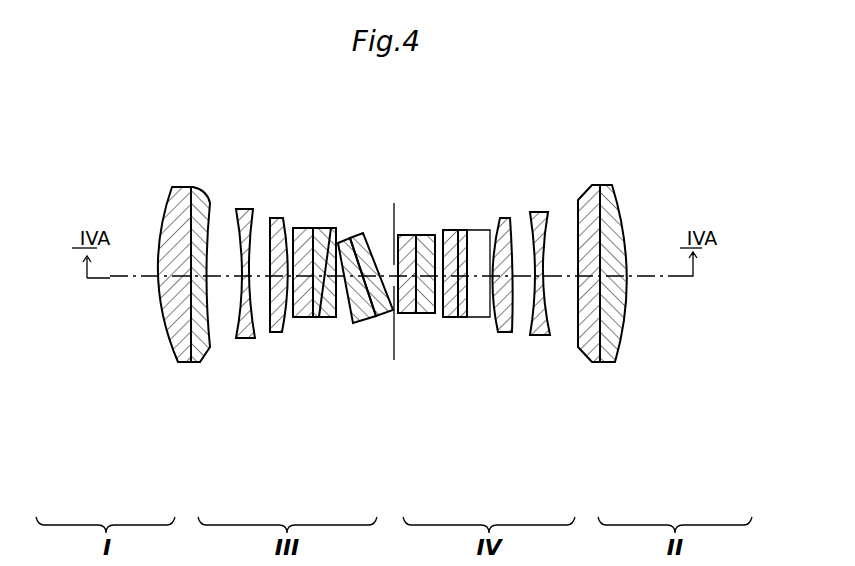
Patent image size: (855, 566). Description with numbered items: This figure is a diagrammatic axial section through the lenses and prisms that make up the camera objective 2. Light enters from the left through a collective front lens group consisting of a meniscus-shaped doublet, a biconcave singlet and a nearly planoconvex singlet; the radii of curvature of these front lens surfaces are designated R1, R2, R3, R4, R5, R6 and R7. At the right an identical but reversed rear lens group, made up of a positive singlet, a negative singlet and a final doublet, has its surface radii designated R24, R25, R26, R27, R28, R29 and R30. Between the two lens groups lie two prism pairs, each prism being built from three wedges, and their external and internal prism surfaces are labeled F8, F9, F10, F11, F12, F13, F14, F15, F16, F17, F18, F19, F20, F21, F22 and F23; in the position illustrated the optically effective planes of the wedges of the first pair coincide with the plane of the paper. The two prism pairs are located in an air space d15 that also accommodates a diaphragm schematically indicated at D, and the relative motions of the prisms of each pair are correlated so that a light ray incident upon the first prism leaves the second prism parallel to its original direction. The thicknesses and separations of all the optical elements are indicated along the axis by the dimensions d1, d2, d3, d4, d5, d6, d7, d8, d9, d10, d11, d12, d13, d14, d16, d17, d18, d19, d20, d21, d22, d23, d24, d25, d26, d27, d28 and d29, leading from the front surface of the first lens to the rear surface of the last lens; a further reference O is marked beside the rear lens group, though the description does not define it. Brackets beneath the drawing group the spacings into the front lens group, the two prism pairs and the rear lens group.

The objective 2 is at (133, 318).
The diaphragm D is at (394, 360).
The image plane reference O is at (628, 278).
The radius of curvature R1 is at (158, 262).
The radius of curvature R2 is at (191, 266).
The radius of curvature R3 is at (207, 260).
The radius of curvature R4 is at (240, 266).
The radius of curvature R5 is at (250, 258).
The radius of curvature R6 is at (270, 250).
The radius of curvature R7 is at (287, 255).
The prism surface F8 is at (293, 268).
The prism surface F9 is at (313, 262).
The prism surface F10 is at (335, 262).
The prism surface F11 is at (339, 258).
The prism surface F12 is at (355, 262).
The prism surface F13 is at (372, 262).
The prism surface F14 is at (398, 265).
The prism surface F15 is at (416, 265).
The prism surface F16 is at (434, 265).
The prism surface F17 is at (443, 262).
The prism surface F18 is at (458, 262).
The prism surface F19 is at (488, 262).
The prism surface F20 is at (493, 262).
The prism surface F21 is at (512, 262).
The prism surface F22 is at (534, 262).
The prism surface F23 is at (543, 262).
The radius of curvature R24 is at (578, 258).
The radius of curvature R25 is at (600, 258).
The radius of curvature R26 is at (618, 202).
The radius of curvature R27 is at (621, 217).
The radius of curvature R28 is at (623, 230).
The radius of curvature R29 is at (625, 243).
The radius of curvature R30 is at (627, 255).
The thickness or separation d1 is at (177, 362).
The thickness or separation d2 is at (200, 362).
The thickness or separation d3 is at (223, 276).
The thickness or separation d4 is at (247, 338).
The thickness or separation d5 is at (263, 276).
The thickness or separation d6 is at (278, 332).
The thickness or separation d7 is at (290, 276).
The thickness or separation d8 is at (303, 317).
The thickness or separation d9 is at (313, 317).
The thickness or separation d10 is at (323, 317).
The thickness or separation d11 is at (338, 276).
The thickness or separation d12 is at (352, 323).
The thickness or separation d13 is at (366, 319).
The thickness or separation d14 is at (378, 315).
The air space d15 is at (392, 276).
The thickness or separation d16 is at (408, 313).
The thickness or separation d17 is at (418, 313).
The thickness or separation d18 is at (428, 313).
The thickness or separation d19 is at (440, 276).
The thickness or separation d20 is at (448, 317).
The thickness or separation d21 is at (457, 317).
The thickness or separation d22 is at (465, 317).
The thickness or separation d23 is at (492, 276).
The thickness or separation d24 is at (505, 332).
The thickness or separation d25 is at (522, 276).
The thickness or separation d26 is at (540, 335).
The thickness or separation d27 is at (565, 276).
The thickness or separation d28 is at (593, 362).
The thickness or separation d29 is at (613, 362).